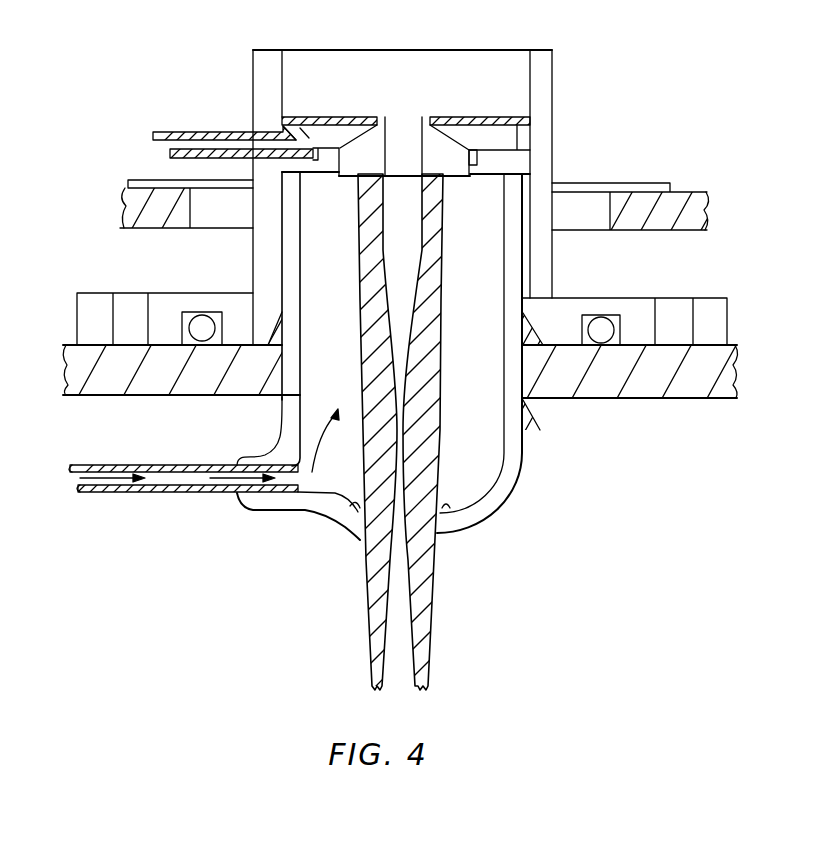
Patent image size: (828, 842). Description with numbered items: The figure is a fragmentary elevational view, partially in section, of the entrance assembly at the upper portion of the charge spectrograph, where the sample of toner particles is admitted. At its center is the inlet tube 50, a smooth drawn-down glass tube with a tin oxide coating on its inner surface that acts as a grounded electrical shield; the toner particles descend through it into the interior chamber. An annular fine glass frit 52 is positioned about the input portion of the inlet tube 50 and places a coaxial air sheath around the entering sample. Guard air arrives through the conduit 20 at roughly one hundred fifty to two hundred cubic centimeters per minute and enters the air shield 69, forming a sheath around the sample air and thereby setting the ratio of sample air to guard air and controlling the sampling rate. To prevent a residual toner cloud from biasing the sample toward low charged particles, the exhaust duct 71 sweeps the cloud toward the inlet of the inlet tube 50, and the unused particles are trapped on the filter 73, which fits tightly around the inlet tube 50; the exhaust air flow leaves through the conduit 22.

The conduit 20 is at (172, 491).
The conduit 22 is at (186, 131).
The inlet tube 50 is at (445, 371).
The annular fine glass frit 52 is at (437, 147).
The air shield 69 is at (495, 494).
The exhaust duct 71 is at (281, 121).
The filter 73 is at (346, 116).